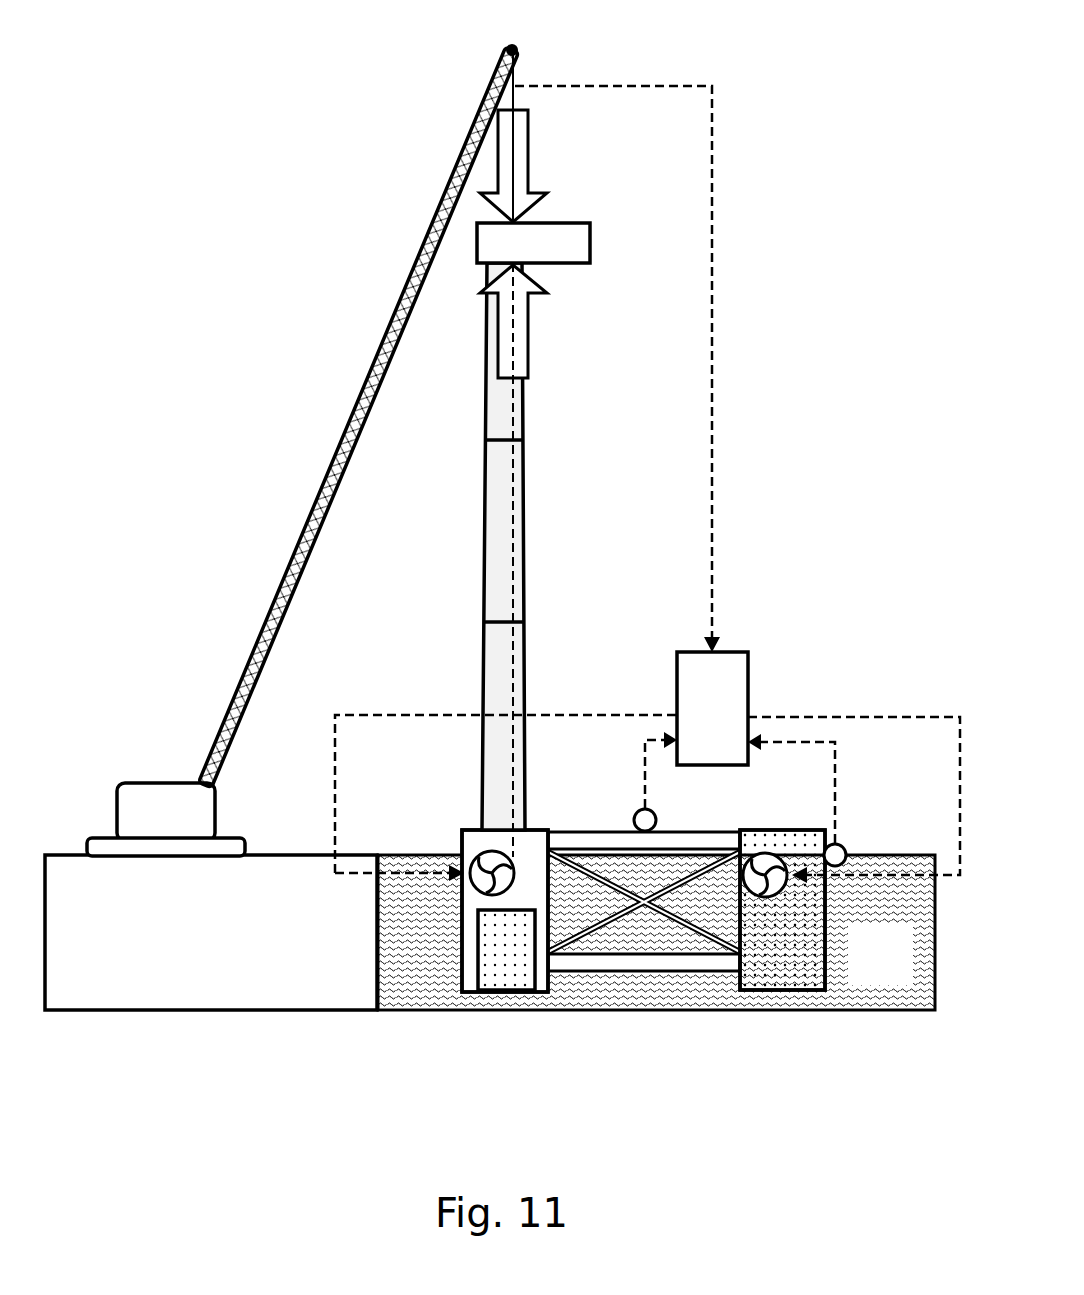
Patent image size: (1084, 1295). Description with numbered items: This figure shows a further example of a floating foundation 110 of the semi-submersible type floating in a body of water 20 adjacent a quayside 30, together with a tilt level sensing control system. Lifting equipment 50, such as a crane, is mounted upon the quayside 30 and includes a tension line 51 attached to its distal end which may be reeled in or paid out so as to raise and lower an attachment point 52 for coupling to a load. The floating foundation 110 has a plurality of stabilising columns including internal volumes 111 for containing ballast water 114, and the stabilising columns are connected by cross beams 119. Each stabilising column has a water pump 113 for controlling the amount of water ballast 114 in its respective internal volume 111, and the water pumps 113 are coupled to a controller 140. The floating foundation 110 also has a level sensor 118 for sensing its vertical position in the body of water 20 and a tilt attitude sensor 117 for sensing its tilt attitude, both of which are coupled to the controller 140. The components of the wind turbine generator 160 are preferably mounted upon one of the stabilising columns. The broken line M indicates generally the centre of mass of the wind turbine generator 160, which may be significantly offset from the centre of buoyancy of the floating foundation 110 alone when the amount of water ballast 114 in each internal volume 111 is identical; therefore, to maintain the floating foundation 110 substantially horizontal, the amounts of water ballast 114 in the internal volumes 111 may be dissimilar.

The body of water 20 is at (883, 976).
The quayside 30 is at (218, 958).
The lifting equipment 50 is at (310, 505).
The tension line 51 is at (516, 79).
The attachment point 52 is at (522, 222).
The floating foundation 110 is at (458, 820).
The internal volumes 111 is at (537, 842).
The water pump 113 is at (480, 884).
The ballast water 114 is at (514, 968).
The tilt attitude sensor 117 is at (640, 810).
The level sensor 118 is at (843, 850).
The cross beams 119 is at (618, 960).
The controller 140 is at (736, 718).
The wind turbine generator 160 is at (533, 510).
The broken line indicating centre of mass M is at (511, 580).